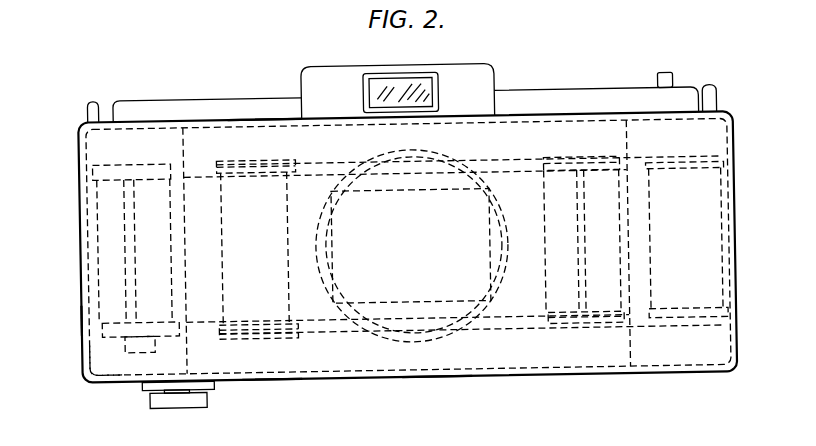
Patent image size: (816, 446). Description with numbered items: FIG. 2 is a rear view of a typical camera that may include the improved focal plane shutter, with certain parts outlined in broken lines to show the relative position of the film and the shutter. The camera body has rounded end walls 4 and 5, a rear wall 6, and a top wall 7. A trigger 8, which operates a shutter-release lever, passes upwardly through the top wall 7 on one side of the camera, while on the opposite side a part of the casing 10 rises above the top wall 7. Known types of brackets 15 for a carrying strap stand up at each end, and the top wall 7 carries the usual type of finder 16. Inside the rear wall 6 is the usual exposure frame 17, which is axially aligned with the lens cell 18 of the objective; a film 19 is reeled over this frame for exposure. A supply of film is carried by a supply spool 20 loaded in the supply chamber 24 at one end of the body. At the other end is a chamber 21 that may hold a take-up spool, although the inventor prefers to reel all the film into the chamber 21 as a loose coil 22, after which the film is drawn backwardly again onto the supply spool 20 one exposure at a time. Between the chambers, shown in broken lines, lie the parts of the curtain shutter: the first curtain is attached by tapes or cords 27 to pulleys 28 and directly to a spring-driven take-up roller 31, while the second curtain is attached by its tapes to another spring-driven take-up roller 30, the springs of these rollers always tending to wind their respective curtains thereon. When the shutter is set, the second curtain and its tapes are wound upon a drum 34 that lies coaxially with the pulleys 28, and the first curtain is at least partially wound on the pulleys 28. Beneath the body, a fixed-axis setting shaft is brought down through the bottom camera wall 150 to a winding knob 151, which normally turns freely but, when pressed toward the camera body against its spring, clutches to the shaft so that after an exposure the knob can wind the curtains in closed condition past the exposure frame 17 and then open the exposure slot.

The rounded end wall 4 is at (81, 312).
The rounded end wall 5 is at (738, 273).
The rear wall 6 is at (269, 377).
The top wall 7 is at (264, 118).
The trigger 8 is at (676, 75).
The casing 10 is at (209, 96).
The brackets 15 is at (100, 97).
The finder 16 is at (426, 83).
The exposure frame 17 is at (406, 190).
The lens cell 18 is at (461, 178).
The film 19 is at (192, 318).
The supply spool 20 is at (125, 261).
The chamber 21 is at (630, 366).
The loose coil 22 is at (711, 190).
The supply chamber 24 is at (95, 351).
The tapes or cords 27 is at (324, 161).
The pulleys 28 is at (294, 156).
The spring-driven take-up roller 30 is at (583, 239).
The spring-driven take-up roller 31 is at (602, 240).
The drum 34 is at (225, 250).
The bottom camera wall 150 is at (438, 377).
The winding knob 151 is at (154, 403).